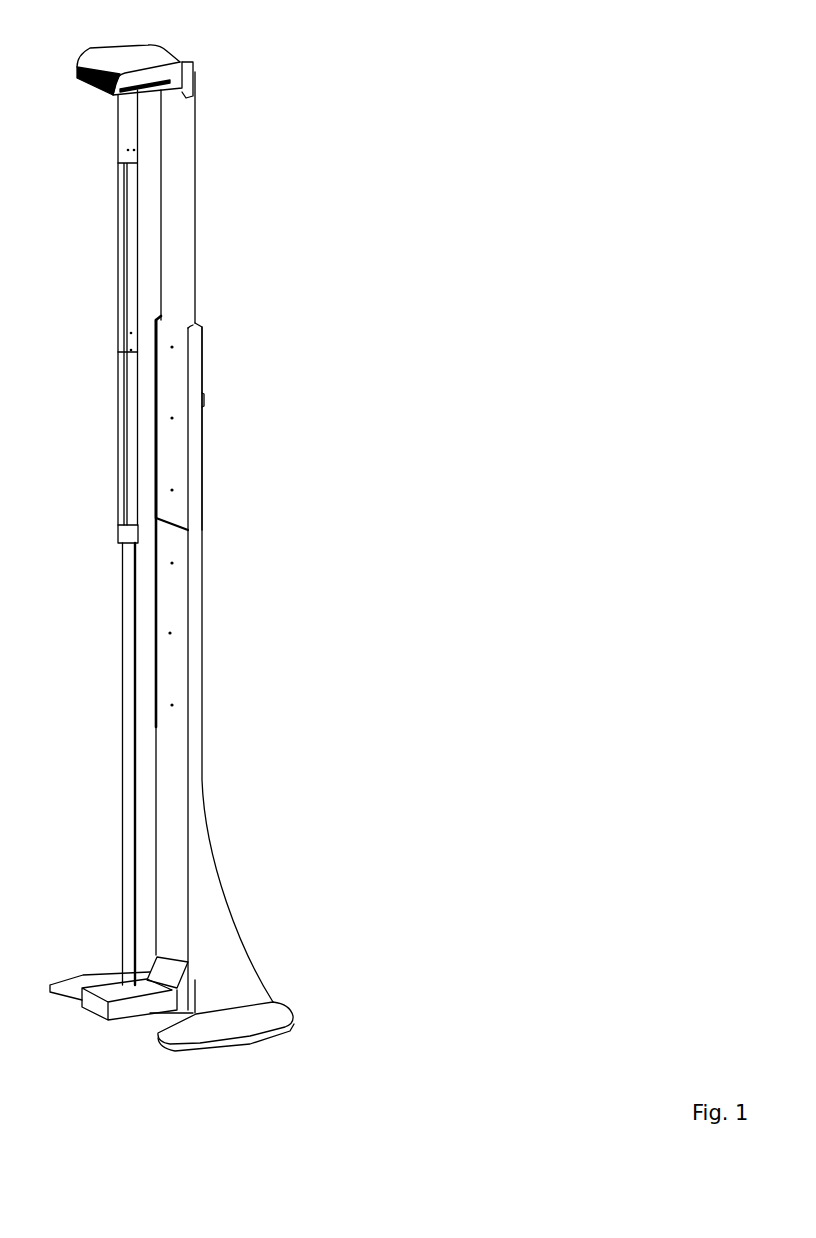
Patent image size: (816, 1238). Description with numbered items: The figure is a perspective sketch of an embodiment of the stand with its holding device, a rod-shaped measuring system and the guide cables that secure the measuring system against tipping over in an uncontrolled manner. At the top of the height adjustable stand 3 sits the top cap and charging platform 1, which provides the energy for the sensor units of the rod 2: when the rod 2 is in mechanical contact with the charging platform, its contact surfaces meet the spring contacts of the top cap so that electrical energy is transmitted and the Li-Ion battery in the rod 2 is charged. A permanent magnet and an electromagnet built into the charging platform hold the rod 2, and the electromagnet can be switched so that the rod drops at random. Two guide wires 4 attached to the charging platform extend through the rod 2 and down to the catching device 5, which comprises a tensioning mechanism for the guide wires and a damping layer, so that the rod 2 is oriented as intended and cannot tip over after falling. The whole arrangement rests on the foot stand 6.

The top cap and charging platform 1 is at (195, 73).
The rod 2 is at (137, 183).
The height adjustable stand 3 is at (196, 377).
The guide wires 4 is at (138, 633).
The catching device 5 is at (167, 993).
The foot stand 6 is at (296, 1025).